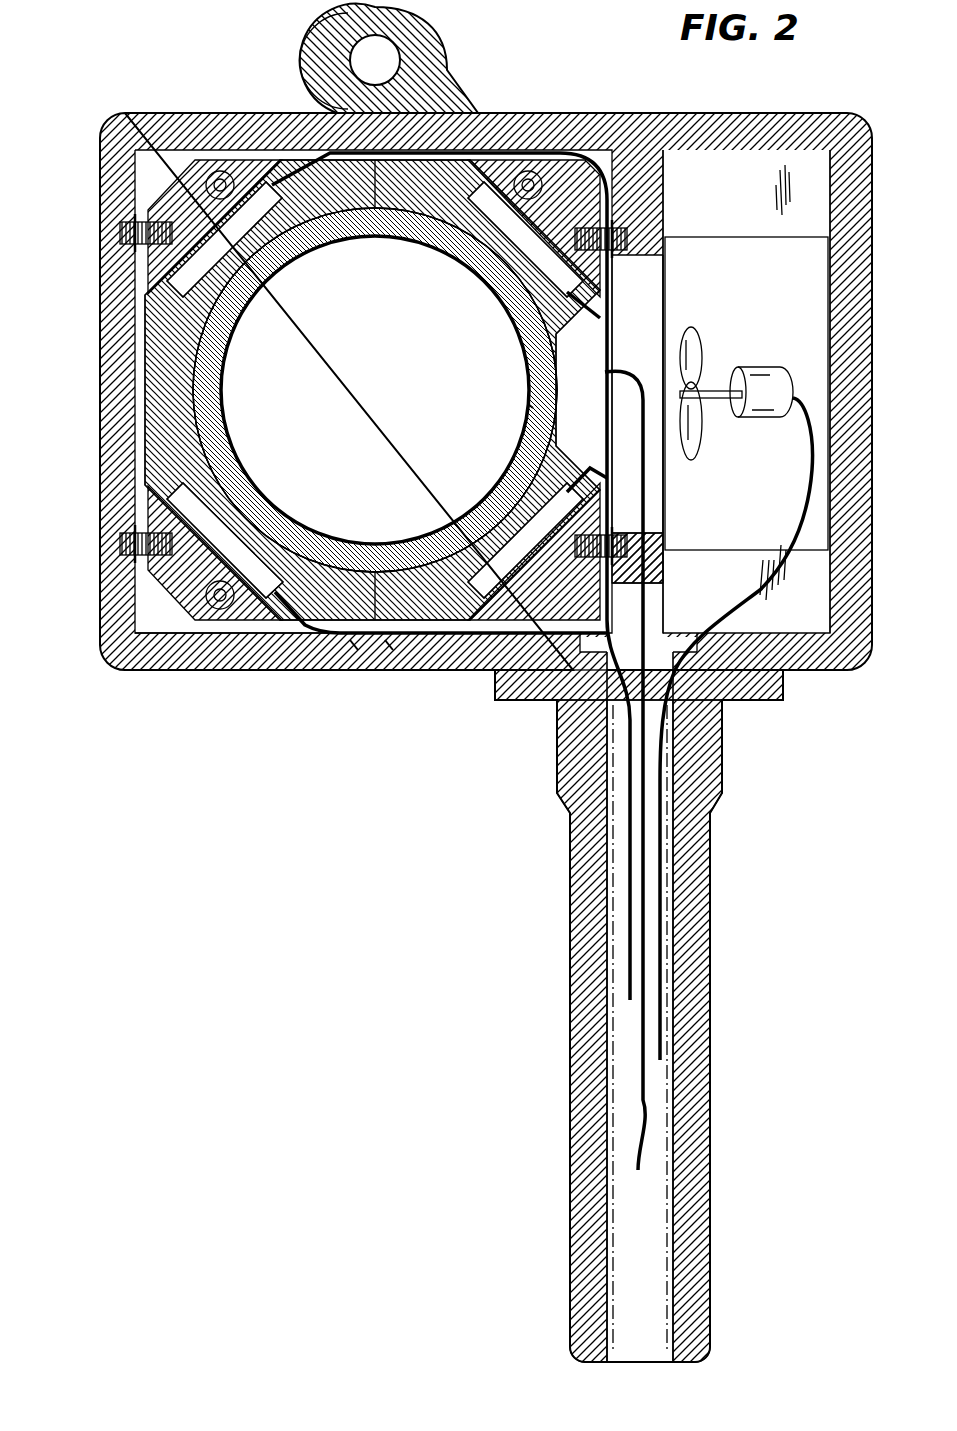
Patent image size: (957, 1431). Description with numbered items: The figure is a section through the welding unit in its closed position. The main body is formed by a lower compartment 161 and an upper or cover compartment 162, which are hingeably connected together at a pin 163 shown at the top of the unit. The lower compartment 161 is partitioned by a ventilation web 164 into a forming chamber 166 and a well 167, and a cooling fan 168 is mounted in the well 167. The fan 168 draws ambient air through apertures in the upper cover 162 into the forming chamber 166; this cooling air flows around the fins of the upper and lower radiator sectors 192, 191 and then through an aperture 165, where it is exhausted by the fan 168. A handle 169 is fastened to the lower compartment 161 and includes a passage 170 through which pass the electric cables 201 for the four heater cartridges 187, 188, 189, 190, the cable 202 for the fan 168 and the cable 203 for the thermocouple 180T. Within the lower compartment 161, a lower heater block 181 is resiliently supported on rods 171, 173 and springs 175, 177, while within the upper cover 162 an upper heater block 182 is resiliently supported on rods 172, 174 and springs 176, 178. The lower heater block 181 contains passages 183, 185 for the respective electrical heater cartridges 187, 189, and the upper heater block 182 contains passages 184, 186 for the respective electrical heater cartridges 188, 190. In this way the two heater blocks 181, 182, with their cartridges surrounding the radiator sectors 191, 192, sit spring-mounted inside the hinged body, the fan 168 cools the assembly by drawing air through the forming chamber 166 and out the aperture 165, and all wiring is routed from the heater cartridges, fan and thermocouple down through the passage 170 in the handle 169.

The lower compartment 161 is at (420, 672).
The upper or cover compartment 162 is at (100, 385).
The pin 163 is at (372, 58).
The ventilation web 164 is at (667, 173).
The aperture 165 is at (656, 309).
The forming chamber 166 is at (155, 160).
The well 167 is at (768, 283).
The cooling fan 168 is at (705, 362).
The handle 169 is at (710, 897).
The passage 170 is at (661, 1267).
The rod 171 is at (478, 655).
The rod 172 is at (221, 608).
The rod 173 is at (528, 185).
The rod 174 is at (220, 185).
The spring 175 is at (663, 555).
The spring 176 is at (125, 548).
The spring 177 is at (615, 262).
The spring 178 is at (122, 233).
The thermocouple 180T is at (530, 408).
The lower heater block 181 is at (392, 653).
The upper heater block 182 is at (357, 645).
The passage 183 is at (590, 465).
The passage 184 is at (160, 470).
The passage 185 is at (452, 173).
The passage 186 is at (152, 298).
The electrical heater cartridge 187 is at (486, 513).
The electrical heater cartridge 188 is at (288, 540).
The electrical heater cartridge 189 is at (493, 281).
The electrical heater cartridge 190 is at (282, 263).
The lower radiator sector 191 is at (526, 354).
The upper radiator sector 192 is at (224, 357).
The electric cables 201 is at (605, 957).
The cable 202 is at (660, 955).
The cable 203 is at (640, 1127).